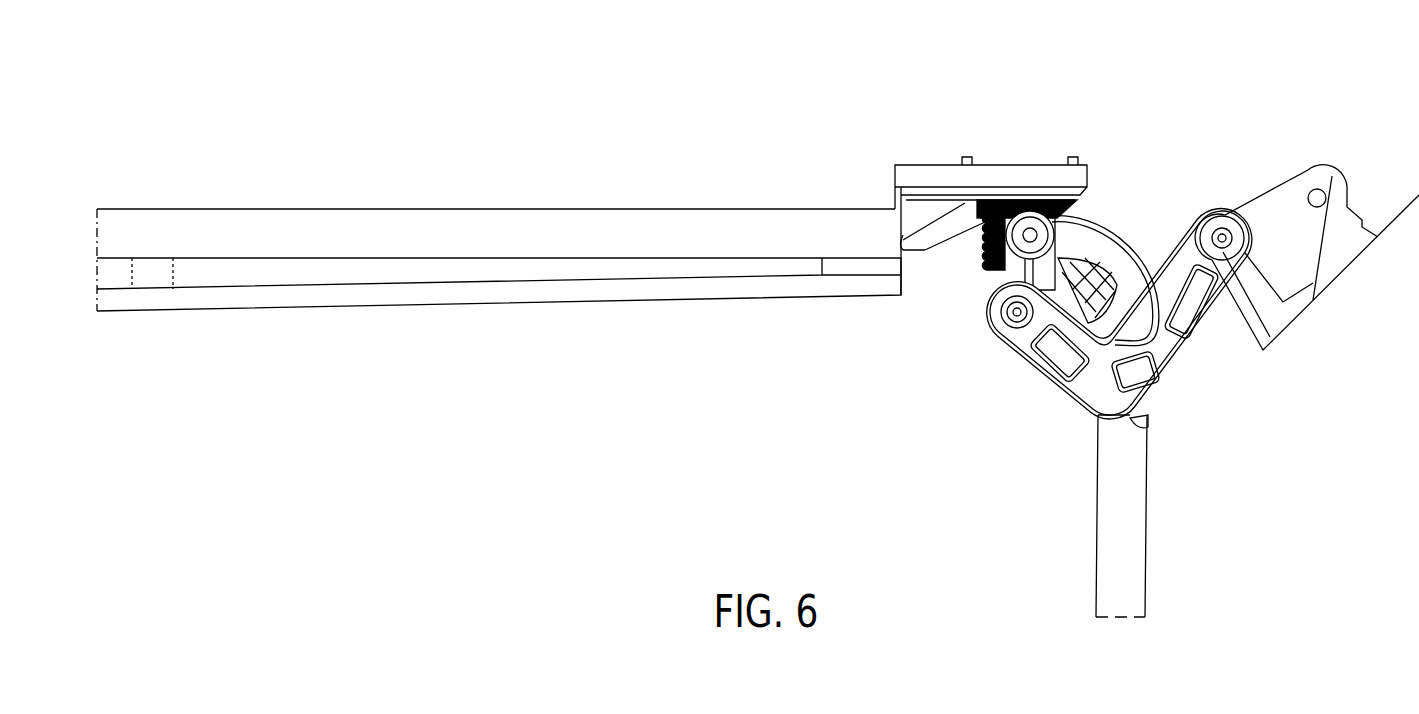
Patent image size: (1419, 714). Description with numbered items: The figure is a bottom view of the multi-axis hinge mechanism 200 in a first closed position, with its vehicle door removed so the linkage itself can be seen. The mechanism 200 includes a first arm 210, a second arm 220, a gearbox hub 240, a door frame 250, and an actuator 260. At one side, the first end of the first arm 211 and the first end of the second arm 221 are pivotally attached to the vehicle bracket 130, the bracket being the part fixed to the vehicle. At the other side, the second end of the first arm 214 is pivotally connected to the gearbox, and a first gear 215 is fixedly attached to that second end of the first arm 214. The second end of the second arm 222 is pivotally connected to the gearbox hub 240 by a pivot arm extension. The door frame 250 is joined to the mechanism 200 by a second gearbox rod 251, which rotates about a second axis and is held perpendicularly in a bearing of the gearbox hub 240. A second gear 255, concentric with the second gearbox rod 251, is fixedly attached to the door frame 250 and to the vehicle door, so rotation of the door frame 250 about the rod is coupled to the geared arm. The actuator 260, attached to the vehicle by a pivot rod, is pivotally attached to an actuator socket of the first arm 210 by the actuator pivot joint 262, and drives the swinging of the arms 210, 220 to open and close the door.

The multi-axis hinge mechanism 200 is at (283, 111).
The door frame 250 is at (395, 226).
The second gearbox rod 251 is at (1063, 165).
The gearbox hub 240 is at (1008, 270).
The second end of the first arm 214 is at (1072, 204).
The first gear 215 is at (982, 224).
The second gear 255 is at (1030, 235).
The second arm 220 is at (1063, 388).
The first arm 210 is at (1127, 292).
The second end of the second arm 222 is at (1016, 314).
The first end of the second arm 221 is at (1223, 237).
The vehicle bracket 130 is at (1265, 215).
The first end of the first arm 211 is at (1320, 197).
The actuator 260 is at (1122, 475).
The actuator pivot joint 262 is at (1128, 420).